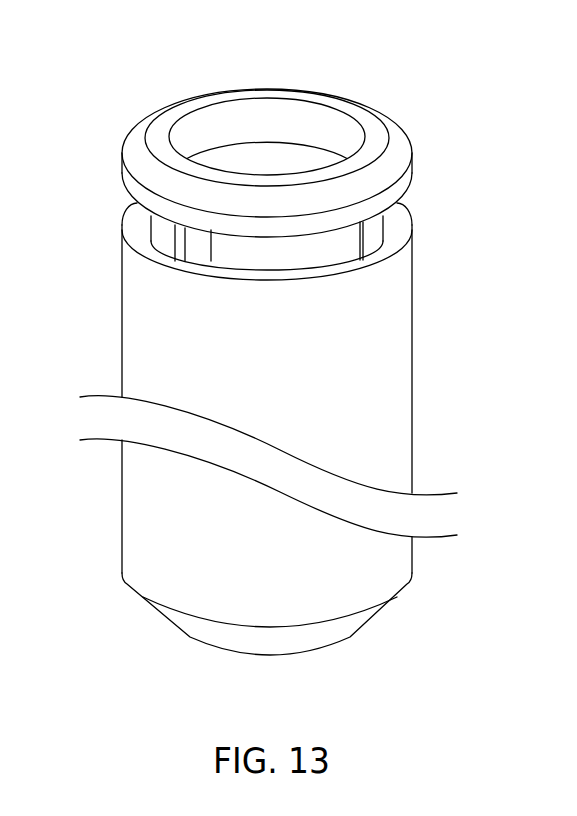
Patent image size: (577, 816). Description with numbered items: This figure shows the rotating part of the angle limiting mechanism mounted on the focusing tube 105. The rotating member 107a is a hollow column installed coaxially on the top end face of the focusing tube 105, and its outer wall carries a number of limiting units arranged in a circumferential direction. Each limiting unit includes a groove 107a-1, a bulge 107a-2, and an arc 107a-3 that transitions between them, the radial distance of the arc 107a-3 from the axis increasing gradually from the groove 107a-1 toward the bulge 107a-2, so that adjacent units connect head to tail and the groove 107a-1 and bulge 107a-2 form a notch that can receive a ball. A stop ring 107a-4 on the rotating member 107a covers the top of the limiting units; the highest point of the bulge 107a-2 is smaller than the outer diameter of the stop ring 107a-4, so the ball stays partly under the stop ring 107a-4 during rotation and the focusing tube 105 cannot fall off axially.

The rotating member 107a is at (252, 91).
The groove 107a-1 is at (198, 252).
The bulge 107a-2 is at (168, 241).
The arc 107a-3 is at (292, 253).
The stop ring 107a-4 is at (405, 200).
The focusing tube 105 is at (400, 378).